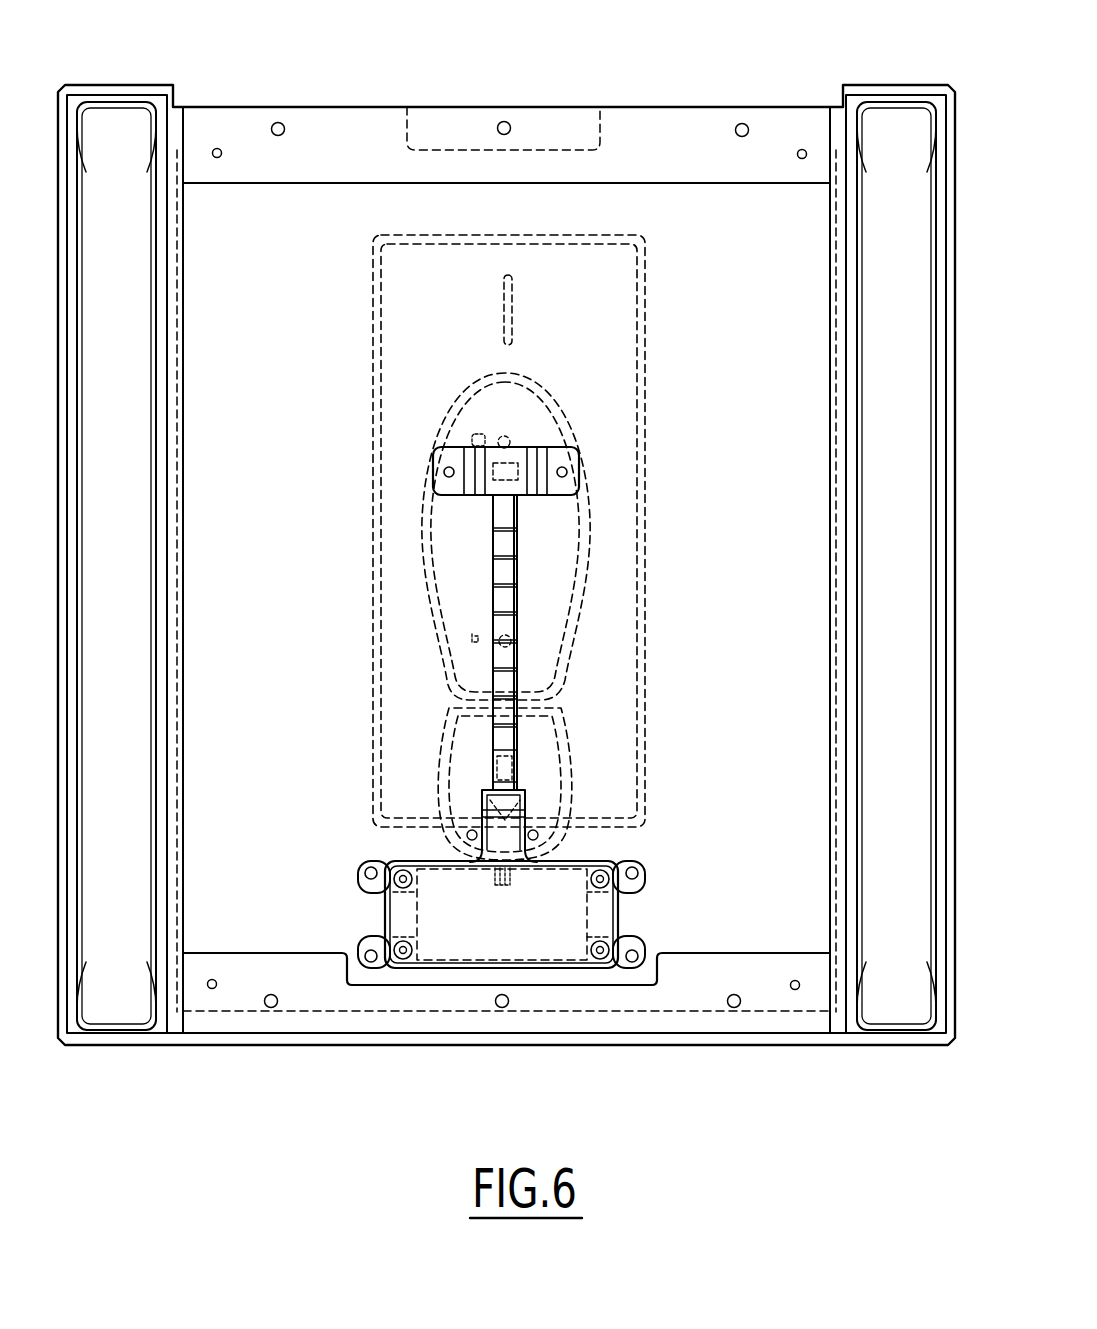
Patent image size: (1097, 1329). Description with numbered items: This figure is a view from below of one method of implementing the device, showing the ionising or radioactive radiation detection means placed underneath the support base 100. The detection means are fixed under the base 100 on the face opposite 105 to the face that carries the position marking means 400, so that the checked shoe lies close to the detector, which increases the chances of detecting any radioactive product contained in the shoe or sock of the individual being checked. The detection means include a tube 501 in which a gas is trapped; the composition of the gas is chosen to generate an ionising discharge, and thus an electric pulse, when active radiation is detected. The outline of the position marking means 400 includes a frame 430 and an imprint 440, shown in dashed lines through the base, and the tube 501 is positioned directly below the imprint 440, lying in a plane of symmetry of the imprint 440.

The support base 100 is at (727, 235).
The opposite face 105 is at (700, 913).
The position marking means 400 is at (524, 701).
The frame 430 is at (638, 784).
The imprint 440 is at (537, 745).
The tube 501 is at (498, 570).